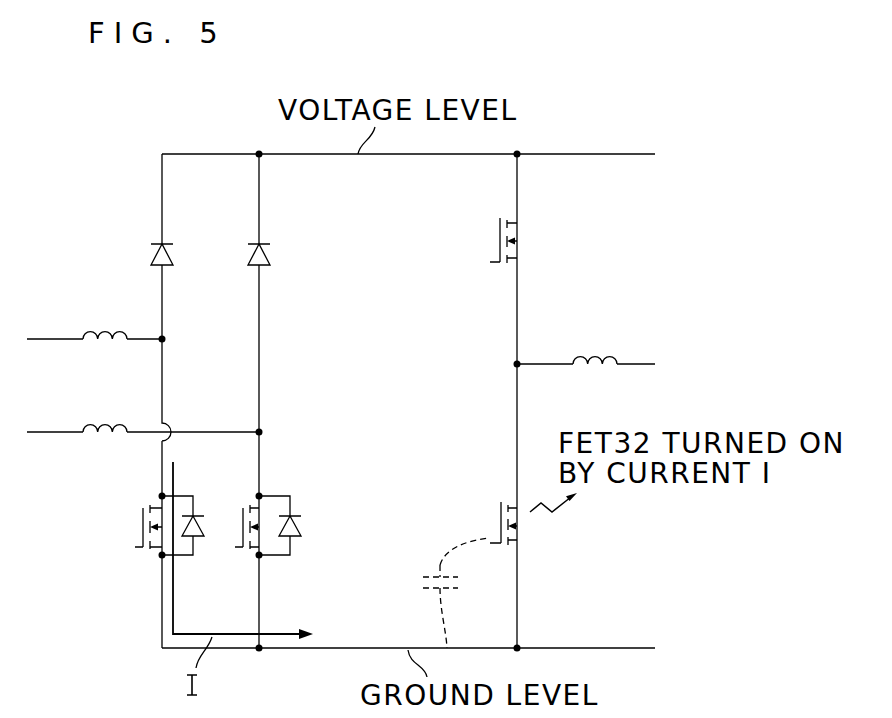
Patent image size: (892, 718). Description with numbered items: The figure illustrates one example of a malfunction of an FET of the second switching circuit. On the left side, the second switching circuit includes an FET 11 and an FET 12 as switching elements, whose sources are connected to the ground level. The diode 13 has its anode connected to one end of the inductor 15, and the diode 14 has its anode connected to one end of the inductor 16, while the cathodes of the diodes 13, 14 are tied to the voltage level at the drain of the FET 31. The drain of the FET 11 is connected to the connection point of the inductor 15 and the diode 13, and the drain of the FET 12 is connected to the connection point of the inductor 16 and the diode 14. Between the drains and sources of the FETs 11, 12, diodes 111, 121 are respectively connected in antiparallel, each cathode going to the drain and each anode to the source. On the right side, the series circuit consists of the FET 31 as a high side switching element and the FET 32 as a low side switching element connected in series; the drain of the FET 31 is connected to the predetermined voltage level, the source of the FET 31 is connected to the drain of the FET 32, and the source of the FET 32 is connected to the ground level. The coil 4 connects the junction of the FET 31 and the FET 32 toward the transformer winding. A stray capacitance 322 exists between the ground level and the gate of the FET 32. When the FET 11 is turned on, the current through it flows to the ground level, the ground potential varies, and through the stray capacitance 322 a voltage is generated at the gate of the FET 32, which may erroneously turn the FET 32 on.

The coil 4 is at (597, 352).
The FET 11 is at (140, 512).
The FET 12 is at (240, 512).
The diode 13 is at (168, 267).
The diode 14 is at (265, 267).
The inductor 15 is at (107, 330).
The inductor 16 is at (107, 422).
The FET 31 is at (494, 232).
The FET 32 is at (493, 518).
The diode 111 is at (200, 540).
The diode 121 is at (298, 540).
The stray capacitance 322 is at (435, 568).